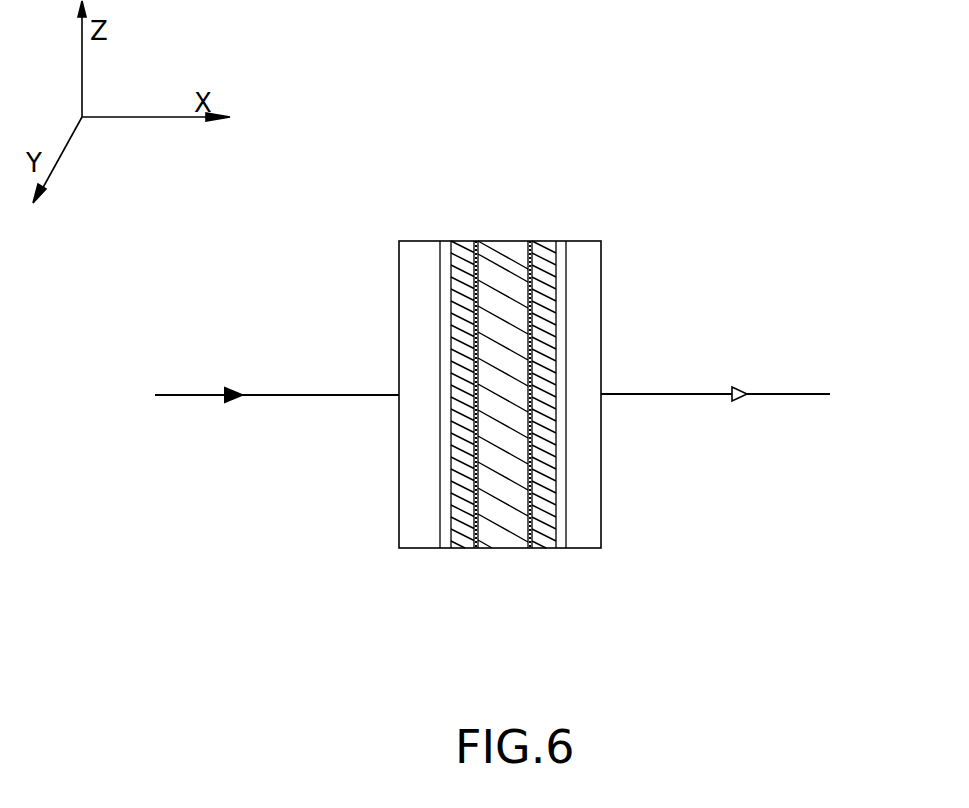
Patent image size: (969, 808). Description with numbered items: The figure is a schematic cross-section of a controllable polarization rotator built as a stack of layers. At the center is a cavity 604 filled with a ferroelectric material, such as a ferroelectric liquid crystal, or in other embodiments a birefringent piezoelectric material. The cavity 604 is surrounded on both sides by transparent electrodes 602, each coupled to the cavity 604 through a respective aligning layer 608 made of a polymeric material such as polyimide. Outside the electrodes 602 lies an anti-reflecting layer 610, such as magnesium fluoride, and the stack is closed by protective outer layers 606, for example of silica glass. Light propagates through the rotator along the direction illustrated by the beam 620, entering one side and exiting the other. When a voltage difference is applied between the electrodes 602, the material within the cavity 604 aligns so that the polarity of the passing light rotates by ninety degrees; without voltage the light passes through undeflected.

The transparent electrodes 602 is at (465, 549).
The cavity 604 is at (498, 241).
The protective outer layers 606 is at (415, 241).
The aligning layers 608 is at (532, 549).
The anti-reflecting layer 610 is at (444, 248).
The beam 620 is at (777, 394).